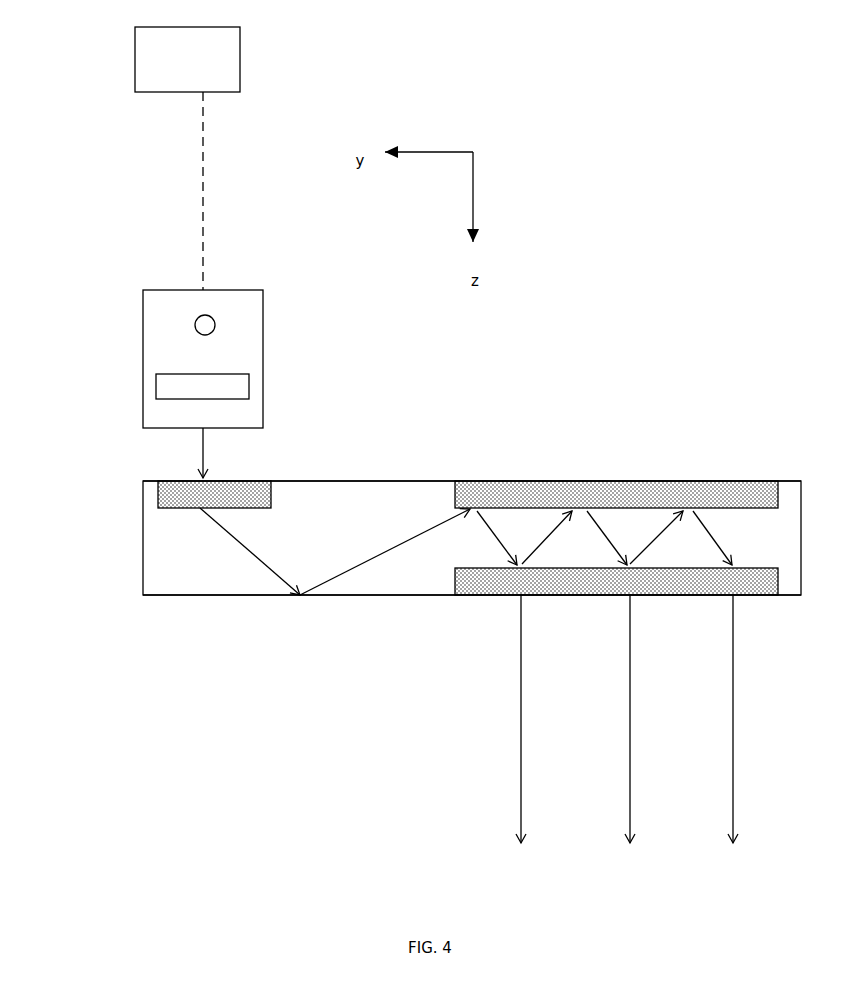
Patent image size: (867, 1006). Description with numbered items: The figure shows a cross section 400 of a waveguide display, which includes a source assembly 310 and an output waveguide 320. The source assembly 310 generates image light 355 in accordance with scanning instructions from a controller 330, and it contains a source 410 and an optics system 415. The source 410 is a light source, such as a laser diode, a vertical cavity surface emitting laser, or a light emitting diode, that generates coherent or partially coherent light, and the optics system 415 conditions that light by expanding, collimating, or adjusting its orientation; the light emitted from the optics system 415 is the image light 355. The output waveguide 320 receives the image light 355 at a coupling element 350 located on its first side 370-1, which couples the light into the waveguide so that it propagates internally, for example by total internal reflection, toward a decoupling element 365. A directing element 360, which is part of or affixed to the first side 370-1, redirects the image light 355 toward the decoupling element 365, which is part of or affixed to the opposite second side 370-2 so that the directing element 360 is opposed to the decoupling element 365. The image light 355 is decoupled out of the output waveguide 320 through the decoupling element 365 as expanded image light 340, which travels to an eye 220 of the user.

The cross section 400 is at (668, 138).
The controller 330 is at (187, 158).
The source assembly 310 is at (143, 302).
The source 410 is at (215, 324).
The optics system 415 is at (249, 384).
The image light 355 is at (204, 450).
The output waveguide 320 is at (143, 578).
The first side 370-1 is at (422, 481).
The second side 370-2 is at (198, 595).
The coupling element 350 is at (158, 496).
The directing element 360 is at (622, 490).
The decoupling element 365 is at (483, 586).
The expanded image light 340 is at (521, 756).
The eye 220 is at (629, 903).